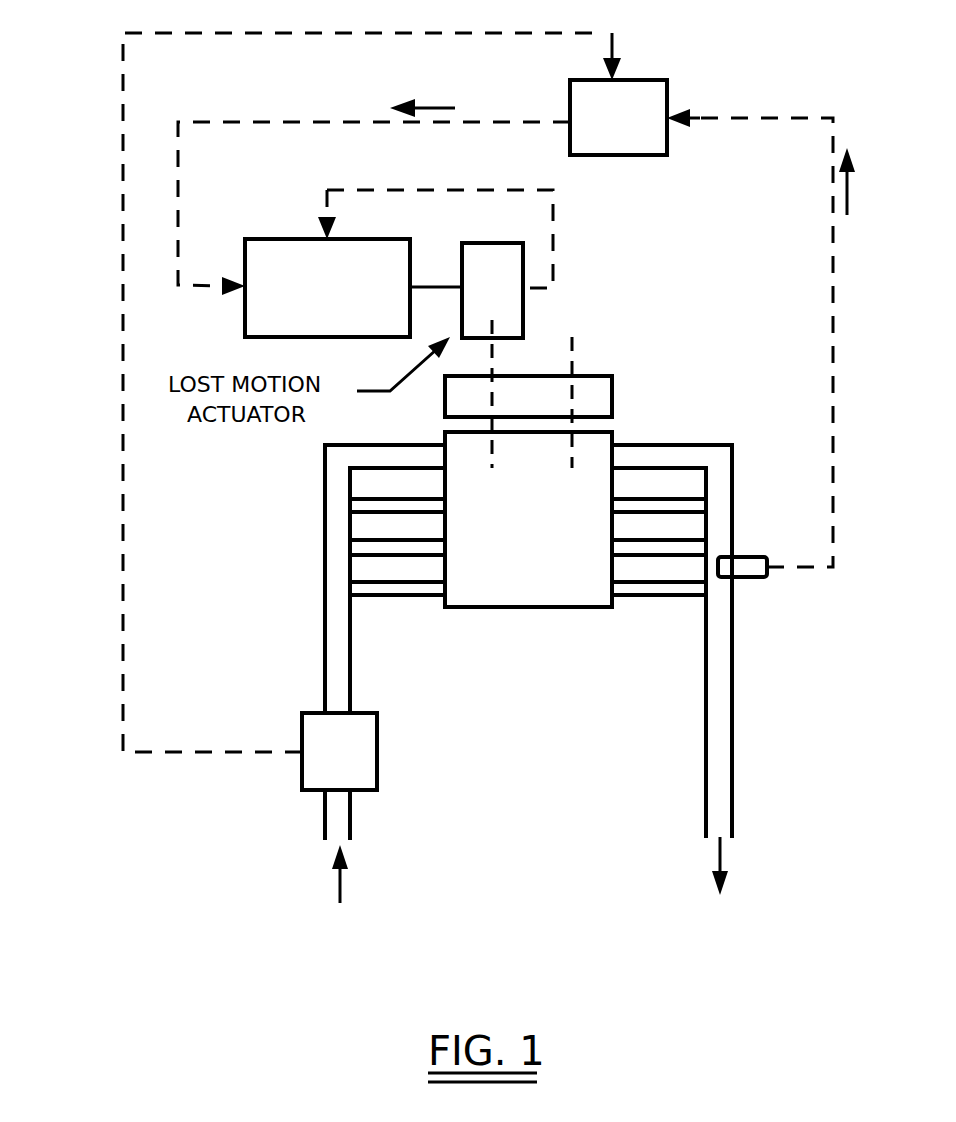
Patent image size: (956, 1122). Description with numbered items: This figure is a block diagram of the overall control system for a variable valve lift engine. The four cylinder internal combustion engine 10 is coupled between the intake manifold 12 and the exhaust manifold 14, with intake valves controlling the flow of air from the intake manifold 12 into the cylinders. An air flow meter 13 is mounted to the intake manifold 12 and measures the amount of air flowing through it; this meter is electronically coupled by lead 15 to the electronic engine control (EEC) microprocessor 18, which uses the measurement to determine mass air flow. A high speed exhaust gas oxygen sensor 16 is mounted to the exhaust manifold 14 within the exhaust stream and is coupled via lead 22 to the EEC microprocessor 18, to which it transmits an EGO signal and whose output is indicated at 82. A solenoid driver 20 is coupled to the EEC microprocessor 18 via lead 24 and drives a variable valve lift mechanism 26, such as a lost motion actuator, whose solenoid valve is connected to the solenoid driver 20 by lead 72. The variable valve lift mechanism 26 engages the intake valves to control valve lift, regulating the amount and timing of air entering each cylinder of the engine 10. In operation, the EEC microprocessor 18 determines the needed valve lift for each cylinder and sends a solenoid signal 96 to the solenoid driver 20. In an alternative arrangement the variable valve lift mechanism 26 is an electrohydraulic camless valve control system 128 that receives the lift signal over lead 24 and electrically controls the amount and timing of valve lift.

The internal combustion engine 10 is at (537, 607).
The intake manifold 12 is at (325, 590).
The air flow meter 13 is at (377, 742).
The exhaust manifold 14 is at (732, 487).
The lead 15 is at (123, 158).
The exhaust gas oxygen sensor 16 is at (755, 577).
The electronic engine control microprocessor 18 is at (650, 80).
The solenoid driver 20 is at (258, 239).
The lead 22 is at (833, 318).
The lead 24 is at (265, 122).
The variable valve lift mechanism 26 is at (512, 300).
The lead 72 is at (430, 286).
The sensor output signal 82 is at (868, 181).
The solenoid signal 96 is at (424, 98).
The electrohydraulic camless valve control system 128 is at (523, 327).